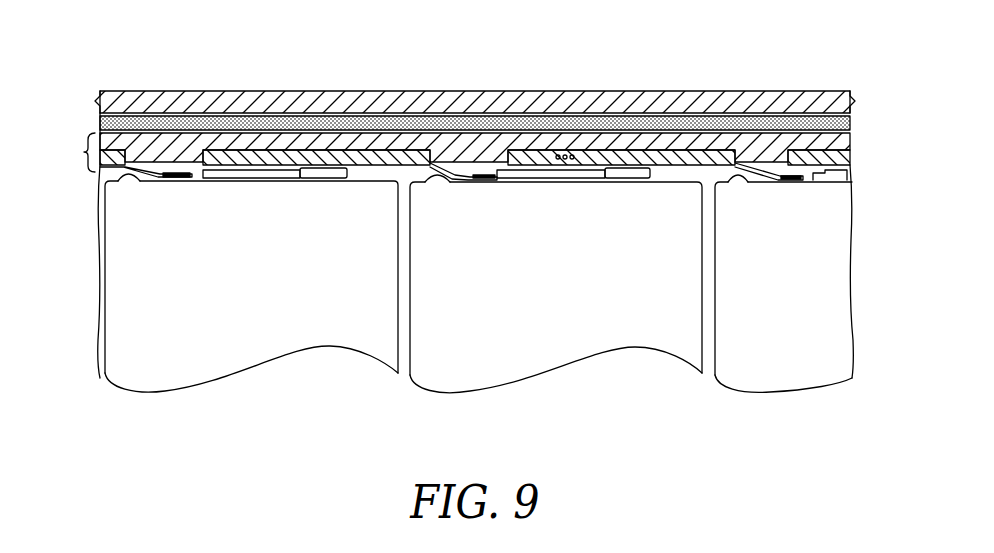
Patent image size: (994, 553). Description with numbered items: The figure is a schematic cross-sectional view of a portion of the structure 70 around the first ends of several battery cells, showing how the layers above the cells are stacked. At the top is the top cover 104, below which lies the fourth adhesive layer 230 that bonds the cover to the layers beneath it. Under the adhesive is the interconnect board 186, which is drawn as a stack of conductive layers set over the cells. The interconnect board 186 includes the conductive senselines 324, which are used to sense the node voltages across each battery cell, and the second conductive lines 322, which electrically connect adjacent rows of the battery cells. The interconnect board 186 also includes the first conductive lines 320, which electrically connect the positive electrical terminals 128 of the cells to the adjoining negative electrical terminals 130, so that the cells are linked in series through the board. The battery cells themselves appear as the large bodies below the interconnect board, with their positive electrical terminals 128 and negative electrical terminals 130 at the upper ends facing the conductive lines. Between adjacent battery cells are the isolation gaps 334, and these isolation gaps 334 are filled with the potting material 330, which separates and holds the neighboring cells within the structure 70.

The display assembly 70 is at (298, 56).
The top cover 104 is at (852, 100).
The fourth adhesive layer 230 is at (852, 124).
The conductive senselines 324 is at (852, 140).
The second conductive lines 322 is at (852, 160).
The first conductive lines 320 is at (178, 182).
The positive electrical terminals 128 is at (247, 178).
The interconnect board 186 is at (84, 152).
The negative electrical terminals 130 is at (100, 185).
The potting material 330 is at (402, 377).
The isolation gaps 334 is at (705, 377).